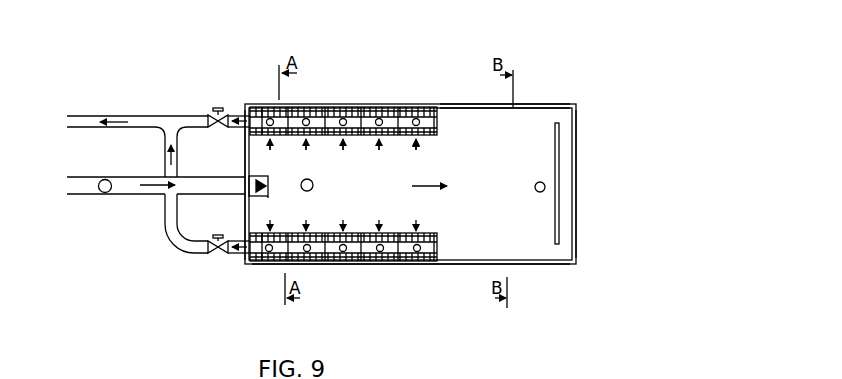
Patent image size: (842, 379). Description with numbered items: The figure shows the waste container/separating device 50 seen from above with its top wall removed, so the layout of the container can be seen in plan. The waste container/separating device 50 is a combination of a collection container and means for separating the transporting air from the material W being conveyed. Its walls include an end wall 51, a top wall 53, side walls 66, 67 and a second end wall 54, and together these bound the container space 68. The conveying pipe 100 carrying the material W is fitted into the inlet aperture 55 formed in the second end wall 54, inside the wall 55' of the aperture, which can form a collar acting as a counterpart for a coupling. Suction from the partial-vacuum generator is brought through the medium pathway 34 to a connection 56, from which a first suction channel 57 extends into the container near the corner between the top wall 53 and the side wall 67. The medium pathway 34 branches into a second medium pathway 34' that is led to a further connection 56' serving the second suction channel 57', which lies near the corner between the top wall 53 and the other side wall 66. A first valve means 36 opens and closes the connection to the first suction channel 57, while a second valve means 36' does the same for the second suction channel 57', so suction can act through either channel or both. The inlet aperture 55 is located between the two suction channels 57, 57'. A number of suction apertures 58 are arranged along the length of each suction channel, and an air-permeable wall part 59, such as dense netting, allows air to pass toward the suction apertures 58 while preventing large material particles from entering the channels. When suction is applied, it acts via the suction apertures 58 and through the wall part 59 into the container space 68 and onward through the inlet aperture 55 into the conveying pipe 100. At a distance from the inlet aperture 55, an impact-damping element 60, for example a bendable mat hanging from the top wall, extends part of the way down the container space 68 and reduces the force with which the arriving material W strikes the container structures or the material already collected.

The medium pathway 34 is at (130, 121).
The second medium pathway 34' is at (163, 227).
The valve means 36 is at (185, 96).
The second valve means 36' is at (199, 261).
The waste container/separating device 50 is at (612, 101).
The end wall 51 is at (577, 175).
The top wall 53 is at (467, 106).
The second end wall 54 is at (242, 160).
The inlet aperture 55 is at (225, 174).
The wall of the inlet aperture 55' is at (292, 209).
The connection 56 is at (212, 92).
The connection 56' is at (235, 267).
The first suction channel 57 is at (330, 93).
The second suction channel 57' is at (343, 276).
The suction apertures 58 is at (308, 117).
The wall part 59 is at (356, 117).
The impact-damping element 60 is at (560, 226).
The side wall 66 is at (507, 265).
The side wall 67 is at (512, 104).
The container space 68 is at (486, 227).
The conveying pipe 100 is at (84, 194).
The material W is at (85, 178).